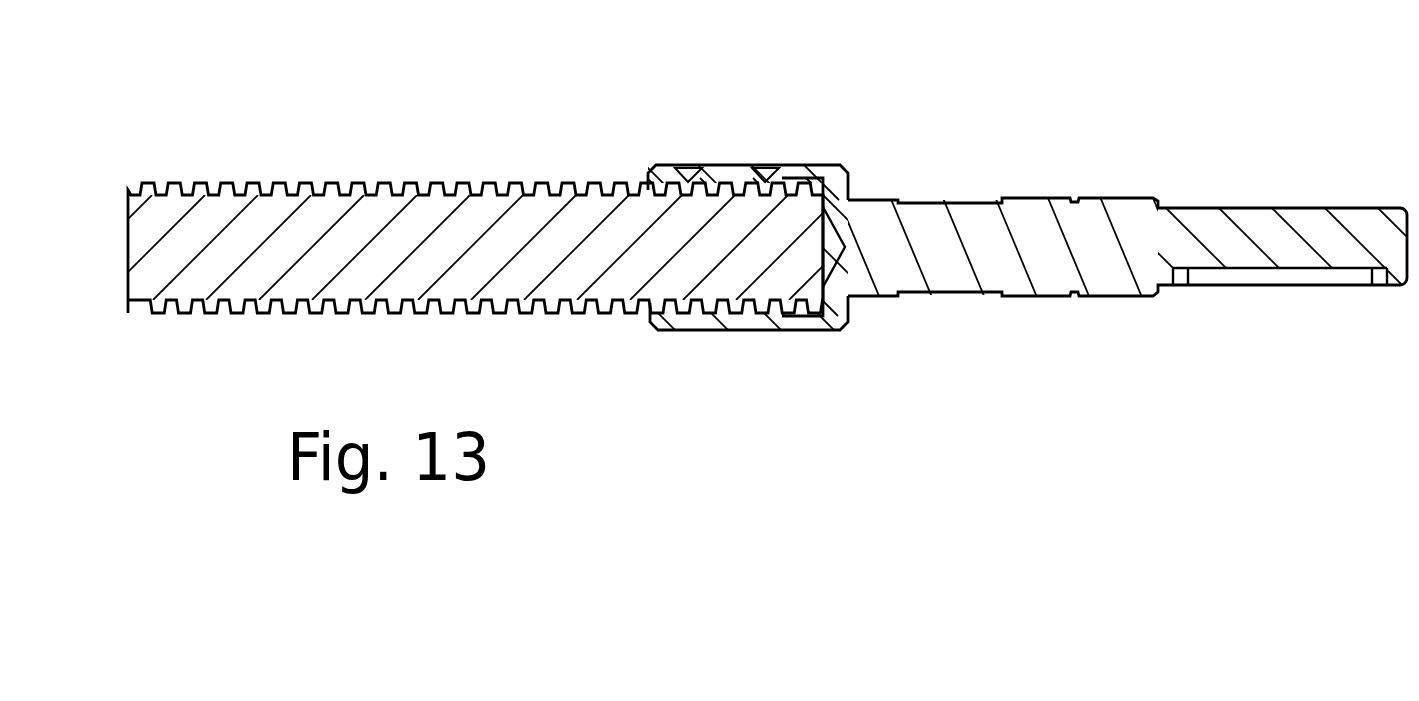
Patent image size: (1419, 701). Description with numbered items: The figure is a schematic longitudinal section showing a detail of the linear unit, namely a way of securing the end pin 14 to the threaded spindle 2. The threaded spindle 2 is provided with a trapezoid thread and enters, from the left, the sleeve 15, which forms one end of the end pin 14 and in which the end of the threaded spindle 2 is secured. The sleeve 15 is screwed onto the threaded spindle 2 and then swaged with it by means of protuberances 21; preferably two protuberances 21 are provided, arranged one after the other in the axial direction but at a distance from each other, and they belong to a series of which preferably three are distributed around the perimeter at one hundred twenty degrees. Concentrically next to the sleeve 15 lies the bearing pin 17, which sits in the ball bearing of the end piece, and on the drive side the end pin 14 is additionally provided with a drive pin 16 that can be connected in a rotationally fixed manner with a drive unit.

The threaded spindle 2 is at (337, 245).
The end pin 14 is at (1058, 170).
The sleeve 15 is at (840, 167).
The drive pin 16 is at (1268, 235).
The bearing pin 17 is at (943, 277).
The protuberances 21 is at (765, 168).